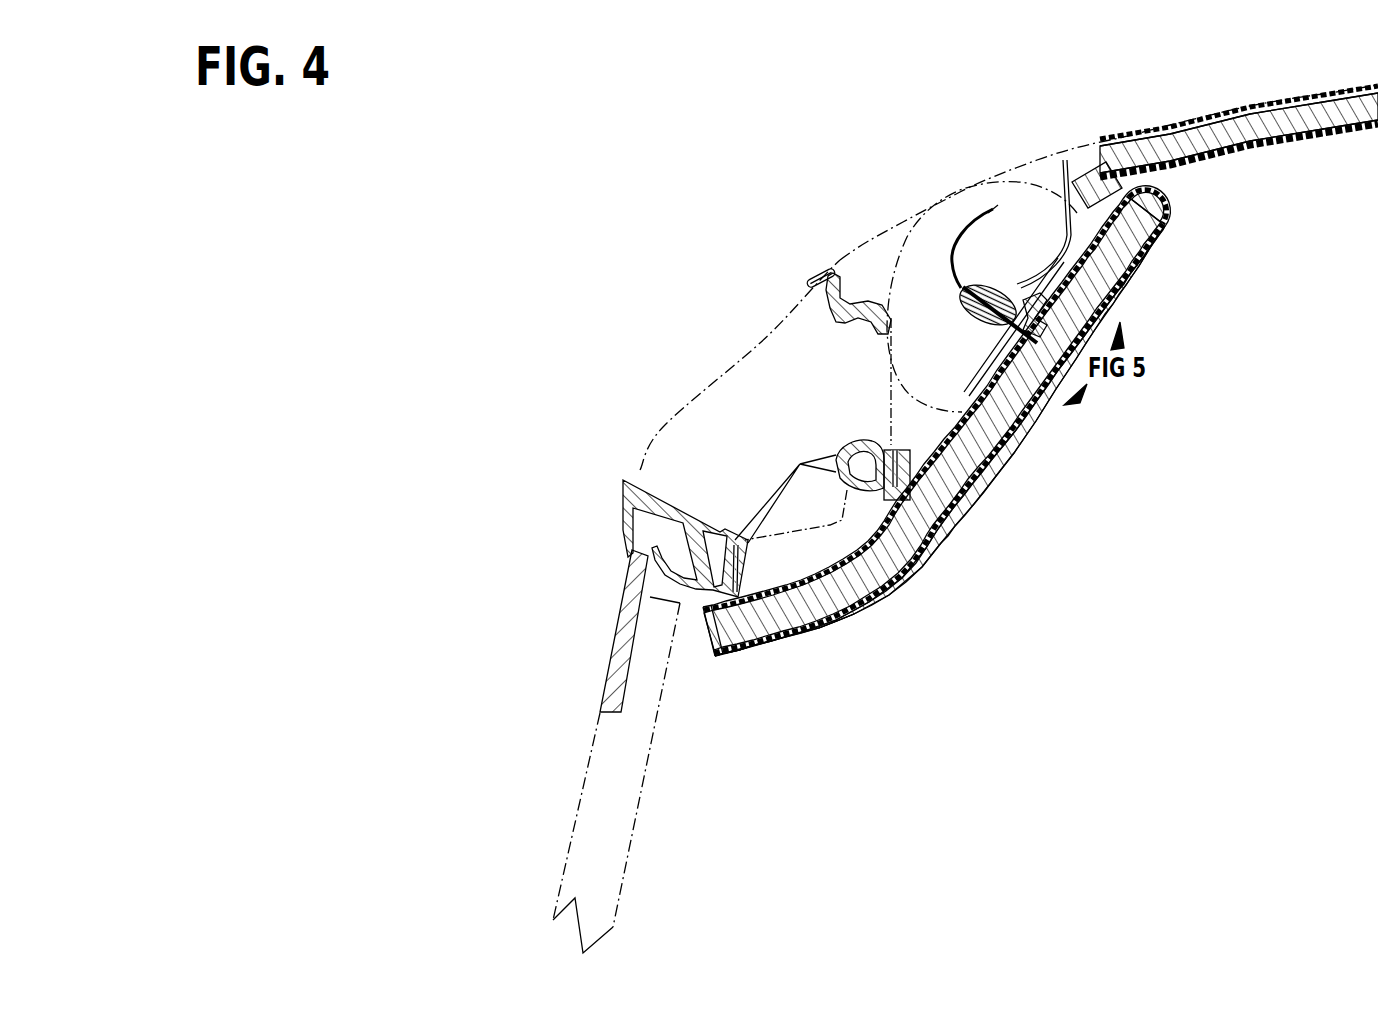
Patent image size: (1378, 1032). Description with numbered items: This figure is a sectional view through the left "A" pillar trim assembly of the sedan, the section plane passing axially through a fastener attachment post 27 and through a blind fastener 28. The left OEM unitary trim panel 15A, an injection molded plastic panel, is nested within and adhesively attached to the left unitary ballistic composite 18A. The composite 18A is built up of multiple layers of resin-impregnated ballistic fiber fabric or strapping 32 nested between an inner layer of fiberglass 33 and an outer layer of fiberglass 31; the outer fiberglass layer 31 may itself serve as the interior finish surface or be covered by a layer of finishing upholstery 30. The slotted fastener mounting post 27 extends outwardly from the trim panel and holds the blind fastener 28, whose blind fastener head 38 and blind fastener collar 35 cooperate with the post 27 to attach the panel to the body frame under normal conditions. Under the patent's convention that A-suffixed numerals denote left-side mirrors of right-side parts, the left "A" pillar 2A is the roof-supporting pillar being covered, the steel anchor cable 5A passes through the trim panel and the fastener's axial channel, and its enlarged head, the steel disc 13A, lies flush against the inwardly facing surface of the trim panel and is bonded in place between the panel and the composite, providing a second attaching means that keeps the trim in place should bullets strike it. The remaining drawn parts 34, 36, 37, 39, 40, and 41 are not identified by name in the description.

The roof side body line 2A is at (902, 222).
The weatherstrip flange 5A is at (972, 222).
The inner panel flange 13A is at (1042, 300).
The left OEM unitary trim panel 15A is at (753, 598).
The left unitary ballistic composite 18A is at (830, 622).
The fastener mounting post 27 is at (1162, 243).
The blind fastener 28 is at (1000, 293).
The layer of finishing upholstery 30 is at (885, 592).
The outer layer of fiberglass 31 is at (910, 560).
The ballistic fiber fabric or strapping 32 is at (950, 527).
The inner layer of fiberglass 33 is at (915, 525).
The inner skin layer 34 is at (912, 493).
The blind fastener collar 35 is at (975, 402).
The roof panel 36 is at (1303, 115).
The door outer panel line 37 is at (720, 356).
The blind fastener head 38 is at (618, 636).
The door glass 39 is at (614, 816).
The clip 40 is at (836, 463).
The bracket 41 is at (826, 290).